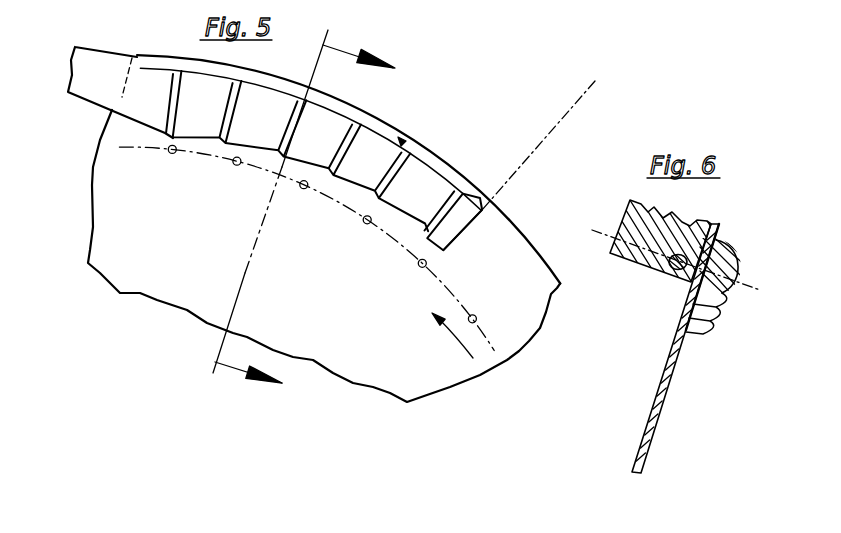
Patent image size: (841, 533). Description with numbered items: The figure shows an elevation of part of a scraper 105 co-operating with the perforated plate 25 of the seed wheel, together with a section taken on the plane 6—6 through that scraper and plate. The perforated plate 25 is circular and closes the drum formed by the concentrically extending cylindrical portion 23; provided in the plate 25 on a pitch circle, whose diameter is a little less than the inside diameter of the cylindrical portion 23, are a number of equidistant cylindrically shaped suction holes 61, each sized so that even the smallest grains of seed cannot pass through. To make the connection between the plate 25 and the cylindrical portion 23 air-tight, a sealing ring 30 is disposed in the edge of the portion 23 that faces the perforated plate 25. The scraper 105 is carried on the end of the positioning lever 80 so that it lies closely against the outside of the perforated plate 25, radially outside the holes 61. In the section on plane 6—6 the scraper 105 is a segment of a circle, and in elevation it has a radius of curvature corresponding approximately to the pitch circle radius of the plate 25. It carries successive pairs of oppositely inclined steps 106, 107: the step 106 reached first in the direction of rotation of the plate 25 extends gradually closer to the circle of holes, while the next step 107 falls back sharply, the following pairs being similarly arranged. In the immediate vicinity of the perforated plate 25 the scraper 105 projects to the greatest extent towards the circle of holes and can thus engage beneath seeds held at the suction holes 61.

In FIG. 5, the positioning lever 80 is at (102, 68).
In FIG. 5, the section plane 6— 6 is at (294, 206).
In FIG. 5, the scraper 105 is at (400, 139).
In FIG. 6, the scraper 105 is at (737, 248).
In FIG. 5, the step 107 is at (460, 207).
In FIG. 5, the step 106 is at (548, 137).
In FIG. 5, the suction hole 61 is at (233, 167).
In FIG. 5, the perforated plate 25 is at (350, 360).
In FIG. 6, the perforated plate 25 is at (650, 410).
In FIG. 6, the cylindrical portion 23 is at (640, 252).
In FIG. 6, the sealing ring 30 is at (670, 275).